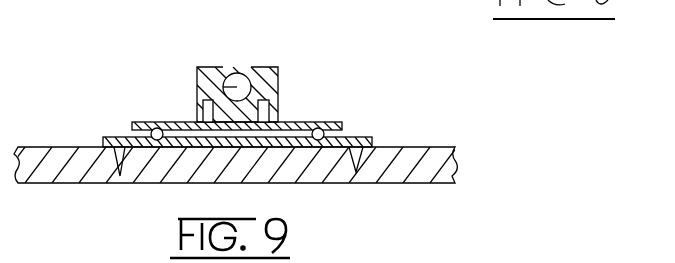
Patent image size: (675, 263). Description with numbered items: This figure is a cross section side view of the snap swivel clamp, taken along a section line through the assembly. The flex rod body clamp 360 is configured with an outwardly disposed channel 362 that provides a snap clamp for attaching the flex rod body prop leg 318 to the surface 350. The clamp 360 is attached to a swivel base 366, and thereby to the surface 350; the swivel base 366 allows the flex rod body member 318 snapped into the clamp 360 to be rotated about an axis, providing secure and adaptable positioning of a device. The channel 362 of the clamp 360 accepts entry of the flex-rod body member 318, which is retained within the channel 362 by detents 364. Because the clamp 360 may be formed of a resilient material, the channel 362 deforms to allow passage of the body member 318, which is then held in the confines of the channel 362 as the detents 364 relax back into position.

The flex rod body prop leg 318 is at (235, 88).
The surface 350 is at (410, 147).
The flex rod body clamp 360 is at (227, 71).
The channel 362 is at (218, 66).
The detents 364 is at (230, 72).
The swivel base 366 is at (303, 116).